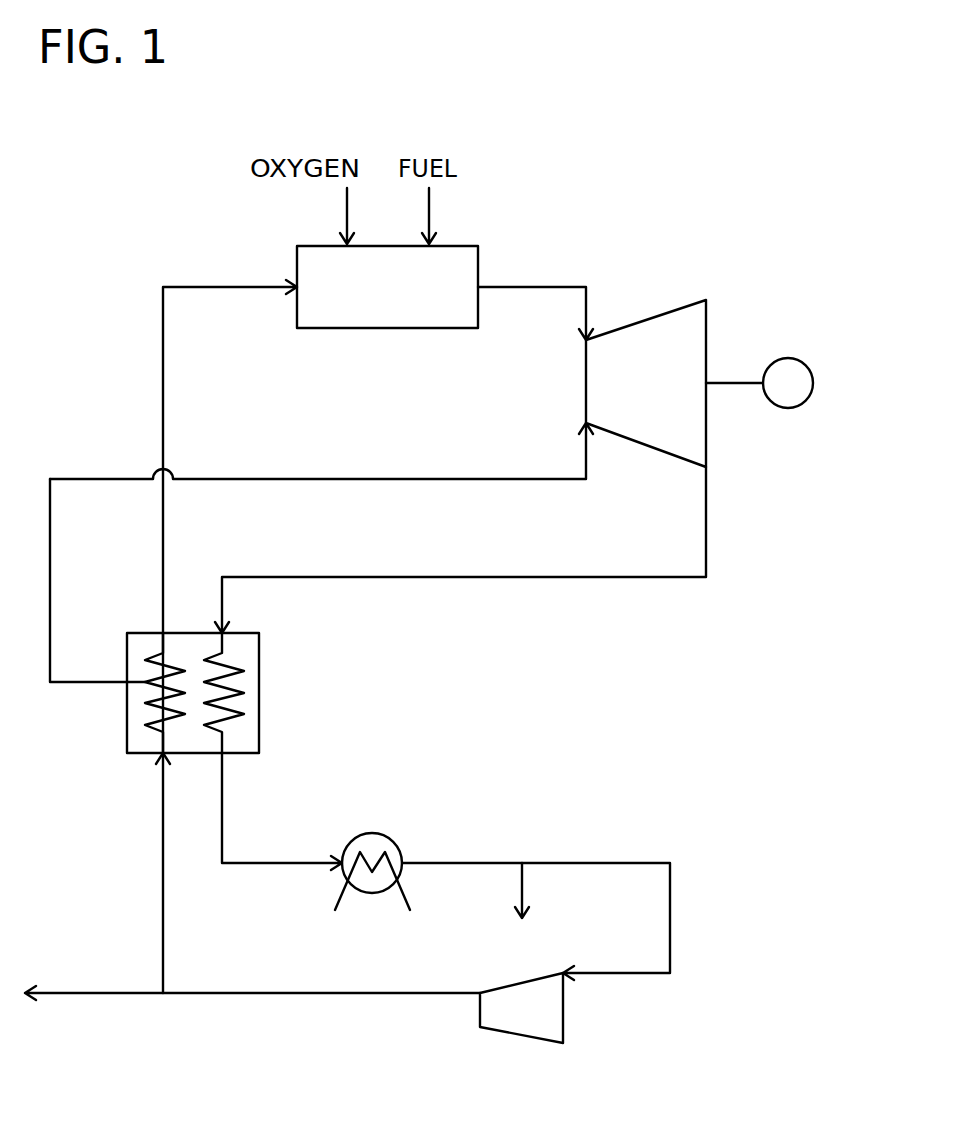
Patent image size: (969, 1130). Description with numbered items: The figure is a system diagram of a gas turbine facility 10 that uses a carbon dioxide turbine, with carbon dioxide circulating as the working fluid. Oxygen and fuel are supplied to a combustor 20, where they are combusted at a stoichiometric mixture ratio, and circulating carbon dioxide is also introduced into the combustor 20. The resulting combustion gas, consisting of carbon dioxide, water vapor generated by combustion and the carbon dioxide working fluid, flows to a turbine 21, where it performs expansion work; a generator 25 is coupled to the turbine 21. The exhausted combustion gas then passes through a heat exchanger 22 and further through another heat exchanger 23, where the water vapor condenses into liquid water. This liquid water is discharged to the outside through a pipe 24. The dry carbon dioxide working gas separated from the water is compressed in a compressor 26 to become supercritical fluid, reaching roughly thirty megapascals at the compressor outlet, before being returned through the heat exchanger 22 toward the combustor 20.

The gas turbine facility 10 is at (652, 143).
The combustor 20 is at (463, 246).
The turbine 21 is at (643, 318).
The heat exchanger 22 is at (259, 688).
The heat exchanger 23 is at (370, 834).
The pipe 24 is at (524, 887).
The generator 25 is at (790, 358).
The compressor 26 is at (565, 1010).